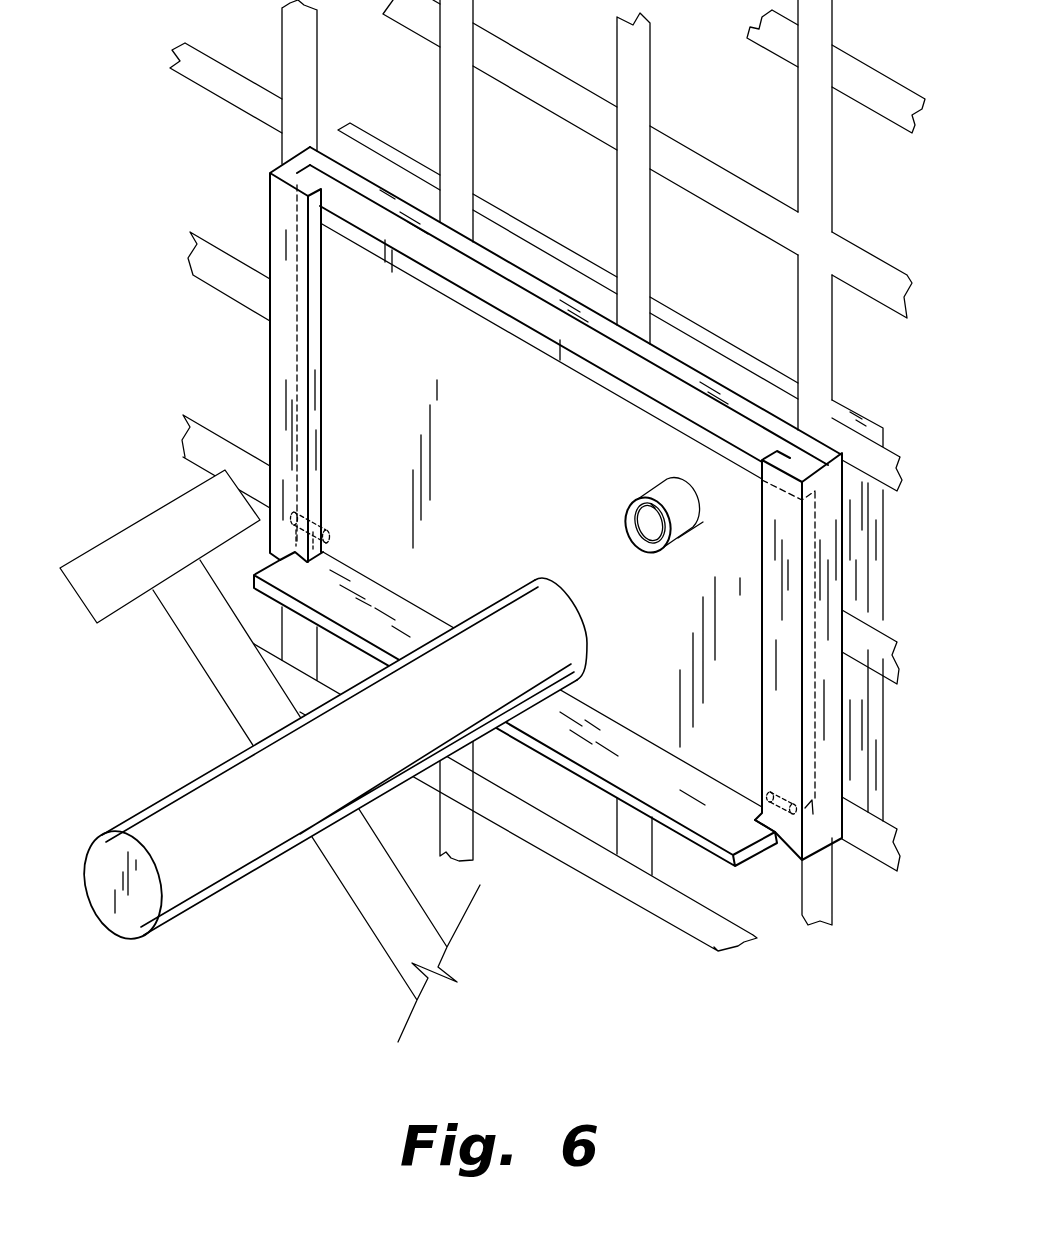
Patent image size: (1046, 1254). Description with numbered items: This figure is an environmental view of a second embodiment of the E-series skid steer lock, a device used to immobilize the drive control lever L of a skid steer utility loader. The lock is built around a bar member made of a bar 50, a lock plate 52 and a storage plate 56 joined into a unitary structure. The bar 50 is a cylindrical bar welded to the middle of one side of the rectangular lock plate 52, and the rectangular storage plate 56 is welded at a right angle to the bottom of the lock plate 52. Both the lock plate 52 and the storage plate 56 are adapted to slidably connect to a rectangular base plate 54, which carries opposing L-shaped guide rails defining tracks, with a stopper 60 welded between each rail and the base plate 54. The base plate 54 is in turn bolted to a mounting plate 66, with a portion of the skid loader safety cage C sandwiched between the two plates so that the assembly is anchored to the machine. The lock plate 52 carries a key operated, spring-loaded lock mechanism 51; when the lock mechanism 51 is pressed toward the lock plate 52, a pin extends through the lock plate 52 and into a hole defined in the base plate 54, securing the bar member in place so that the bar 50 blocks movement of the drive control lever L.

The skid loader safety cage C is at (190, 71).
The drive control lever L is at (128, 532).
The bar 50 is at (140, 930).
The lock mechanism 51 is at (635, 494).
The lock plate 52 is at (657, 634).
The base plate 54 is at (327, 165).
The storage plate 56 is at (714, 860).
The stopper 60 is at (311, 515).
The mounting plate 66 is at (867, 422).